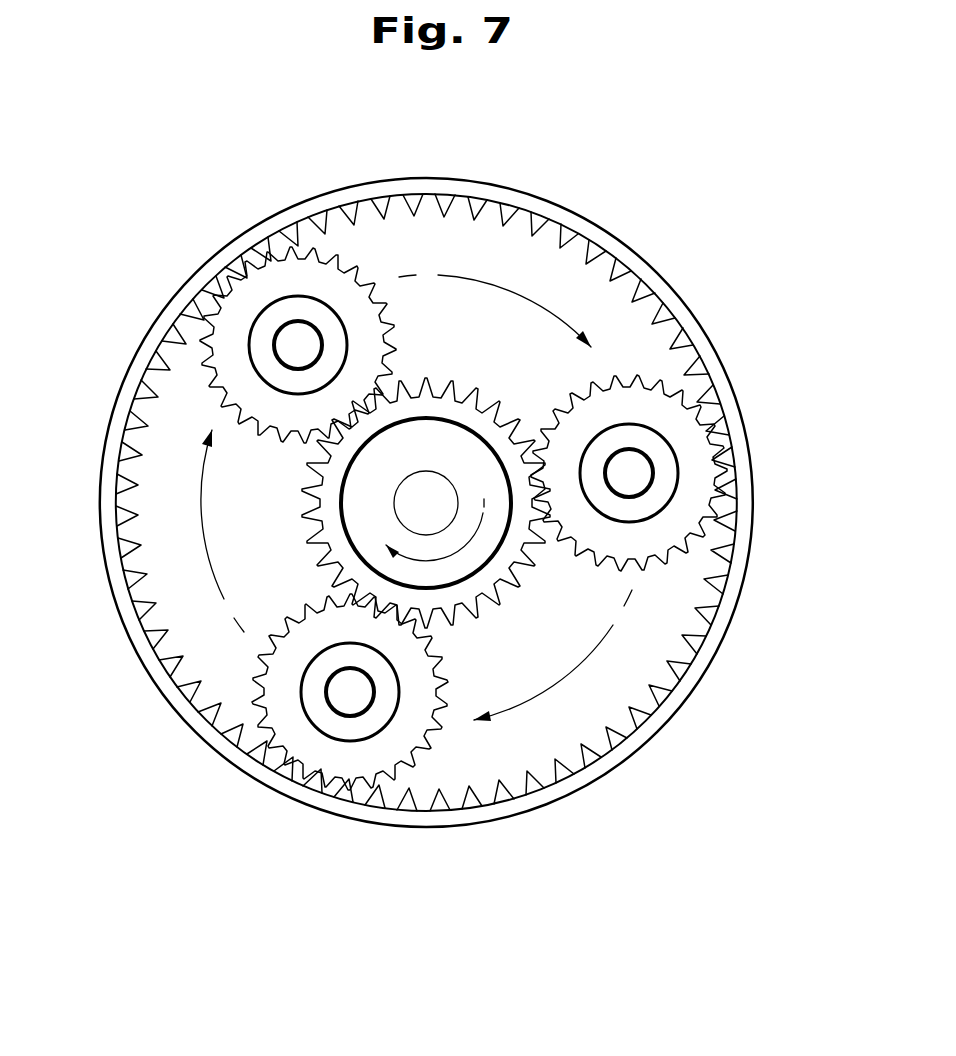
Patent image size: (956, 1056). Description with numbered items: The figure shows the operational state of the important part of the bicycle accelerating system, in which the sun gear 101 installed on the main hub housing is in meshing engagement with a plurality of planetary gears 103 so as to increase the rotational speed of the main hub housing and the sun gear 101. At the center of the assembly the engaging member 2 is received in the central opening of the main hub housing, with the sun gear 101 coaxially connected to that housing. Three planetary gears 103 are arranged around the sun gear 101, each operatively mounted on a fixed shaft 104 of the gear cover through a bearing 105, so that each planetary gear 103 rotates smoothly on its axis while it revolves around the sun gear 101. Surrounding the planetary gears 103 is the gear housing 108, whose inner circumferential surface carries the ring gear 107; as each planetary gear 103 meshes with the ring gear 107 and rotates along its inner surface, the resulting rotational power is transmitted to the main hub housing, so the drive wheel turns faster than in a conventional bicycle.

The engaging member 2 is at (410, 512).
The sun gear 101 is at (481, 395).
The planetary gears 103 is at (253, 293).
The fixed shafts 104 is at (285, 345).
The bearings 105 is at (362, 714).
The ring gear 107 is at (619, 251).
The gear housing 108 is at (723, 373).